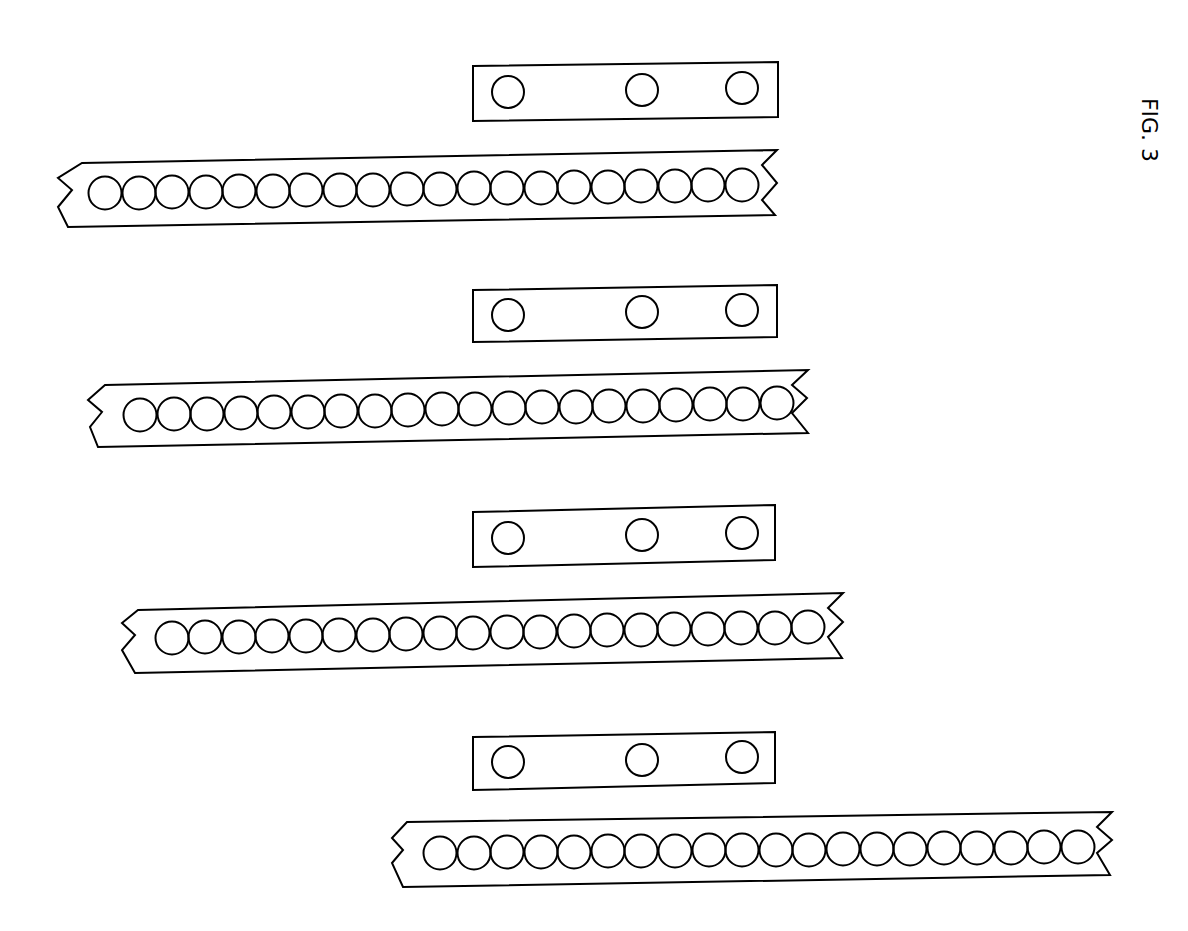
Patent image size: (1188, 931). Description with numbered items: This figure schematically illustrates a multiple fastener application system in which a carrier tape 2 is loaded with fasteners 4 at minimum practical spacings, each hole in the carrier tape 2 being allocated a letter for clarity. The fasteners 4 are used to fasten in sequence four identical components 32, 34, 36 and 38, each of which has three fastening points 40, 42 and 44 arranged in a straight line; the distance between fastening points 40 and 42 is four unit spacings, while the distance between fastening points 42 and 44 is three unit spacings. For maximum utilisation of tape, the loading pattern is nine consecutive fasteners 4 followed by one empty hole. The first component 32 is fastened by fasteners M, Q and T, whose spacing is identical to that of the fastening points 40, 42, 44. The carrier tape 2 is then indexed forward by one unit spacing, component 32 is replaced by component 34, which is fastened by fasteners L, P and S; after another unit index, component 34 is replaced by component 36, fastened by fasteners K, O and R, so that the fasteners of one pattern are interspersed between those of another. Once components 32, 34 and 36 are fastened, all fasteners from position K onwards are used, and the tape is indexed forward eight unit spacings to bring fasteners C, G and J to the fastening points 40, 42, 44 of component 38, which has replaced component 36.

The carrier tape 2 is at (78, 192).
The fastener 4 is at (145, 188).
The first component 32 is at (772, 95).
The second component 34 is at (775, 322).
The third component 36 is at (772, 547).
The fourth component 38 is at (775, 772).
The first fastening point 40 is at (505, 92).
The second fastening point 42 is at (640, 90).
The third fastening point 44 is at (745, 90).